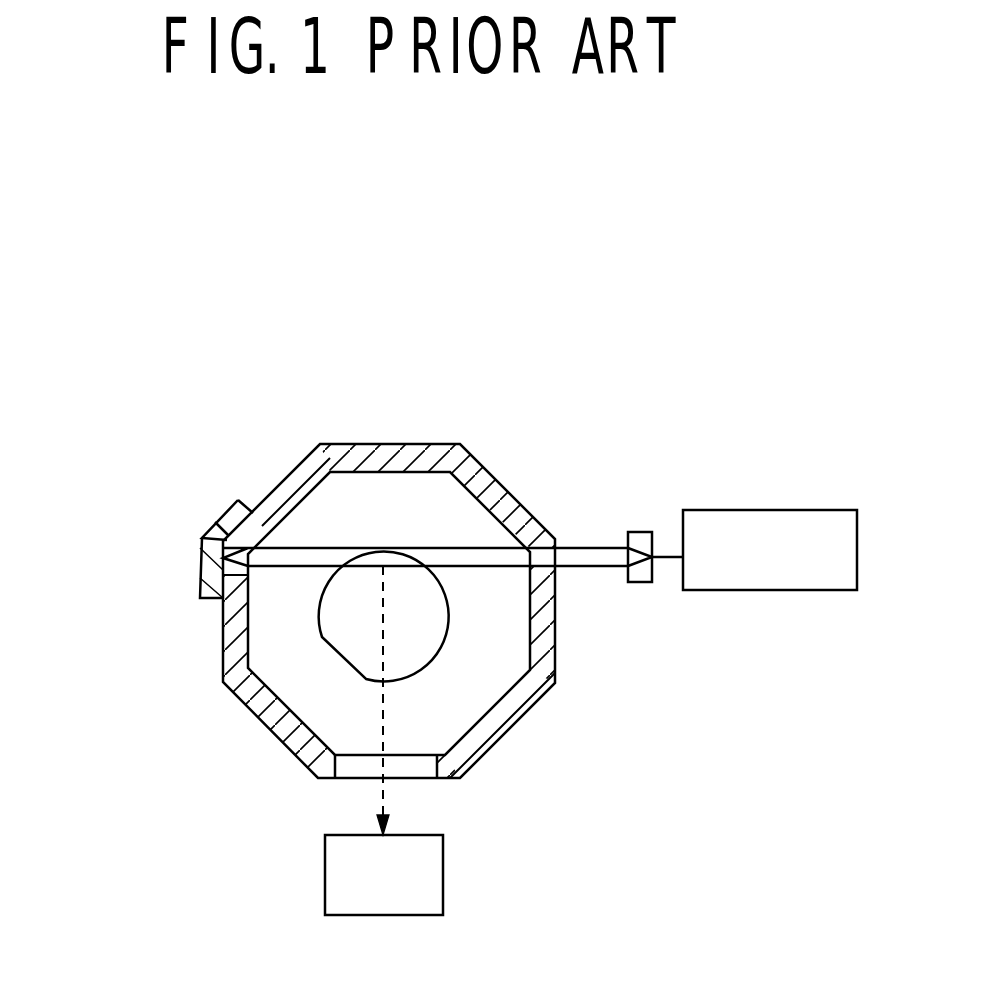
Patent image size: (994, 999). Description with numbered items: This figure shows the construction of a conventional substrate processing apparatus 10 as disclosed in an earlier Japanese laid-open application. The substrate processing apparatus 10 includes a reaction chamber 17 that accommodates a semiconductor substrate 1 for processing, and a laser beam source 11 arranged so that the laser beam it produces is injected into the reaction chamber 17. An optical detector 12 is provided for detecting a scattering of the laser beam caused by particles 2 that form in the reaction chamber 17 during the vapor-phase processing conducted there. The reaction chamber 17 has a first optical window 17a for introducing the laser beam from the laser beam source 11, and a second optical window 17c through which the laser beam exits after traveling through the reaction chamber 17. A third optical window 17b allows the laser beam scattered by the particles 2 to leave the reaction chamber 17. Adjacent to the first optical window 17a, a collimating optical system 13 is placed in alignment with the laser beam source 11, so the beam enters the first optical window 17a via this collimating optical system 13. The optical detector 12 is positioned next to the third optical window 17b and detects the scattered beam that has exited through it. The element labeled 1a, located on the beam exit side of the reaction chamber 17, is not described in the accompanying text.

The semiconductor substrate 1 is at (340, 635).
The exit window / lens 1a is at (197, 575).
The particles 2 is at (383, 548).
The substrate processing apparatus 10 is at (187, 718).
The laser beam source 11 is at (710, 590).
The optical detector 12 is at (423, 887).
The collimating optical system 13 is at (637, 532).
The reaction chamber 17 is at (510, 708).
The first optical window 17a is at (556, 540).
The third optical window 17b is at (407, 768).
The second optical window 17c is at (238, 538).